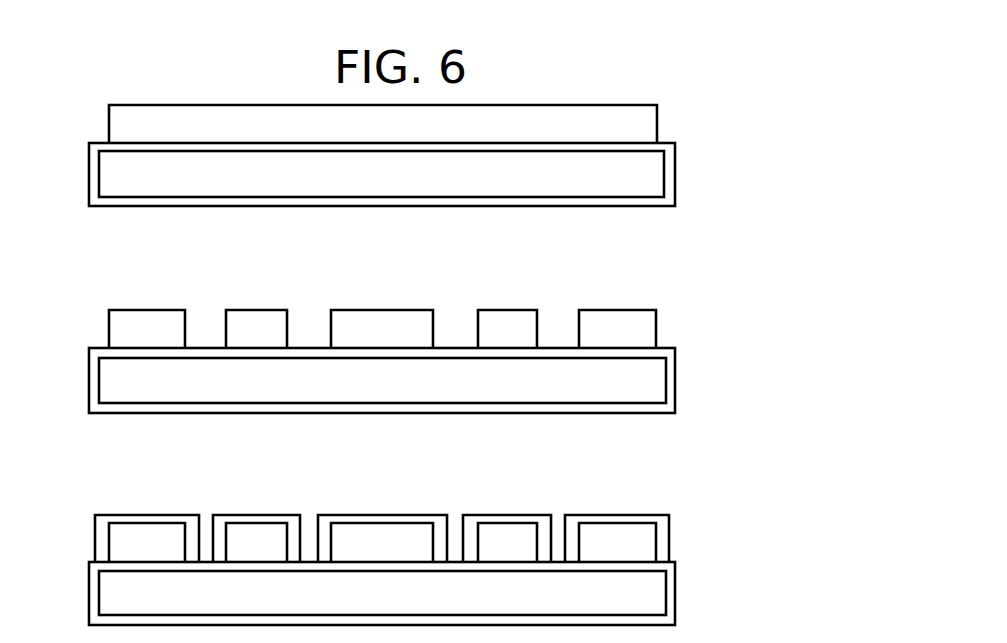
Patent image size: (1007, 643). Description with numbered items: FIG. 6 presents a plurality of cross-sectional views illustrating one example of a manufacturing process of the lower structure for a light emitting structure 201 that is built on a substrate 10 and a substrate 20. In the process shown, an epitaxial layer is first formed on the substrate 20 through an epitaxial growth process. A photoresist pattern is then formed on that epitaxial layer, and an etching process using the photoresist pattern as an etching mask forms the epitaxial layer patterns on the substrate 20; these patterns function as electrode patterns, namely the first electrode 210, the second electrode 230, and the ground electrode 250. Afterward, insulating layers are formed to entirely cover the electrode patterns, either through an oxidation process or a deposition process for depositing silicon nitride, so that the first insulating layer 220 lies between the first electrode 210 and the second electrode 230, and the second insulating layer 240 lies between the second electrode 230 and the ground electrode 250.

The substrate 10 is at (653, 595).
The substrate 20 is at (654, 174).
The light emitting structure 201 is at (677, 519).
The first electrode 210 is at (640, 121).
The first insulating layer 220 is at (470, 520).
The second electrode 230 is at (258, 318).
The second insulating layer 240 is at (573, 520).
The ground electrode 250 is at (148, 318).